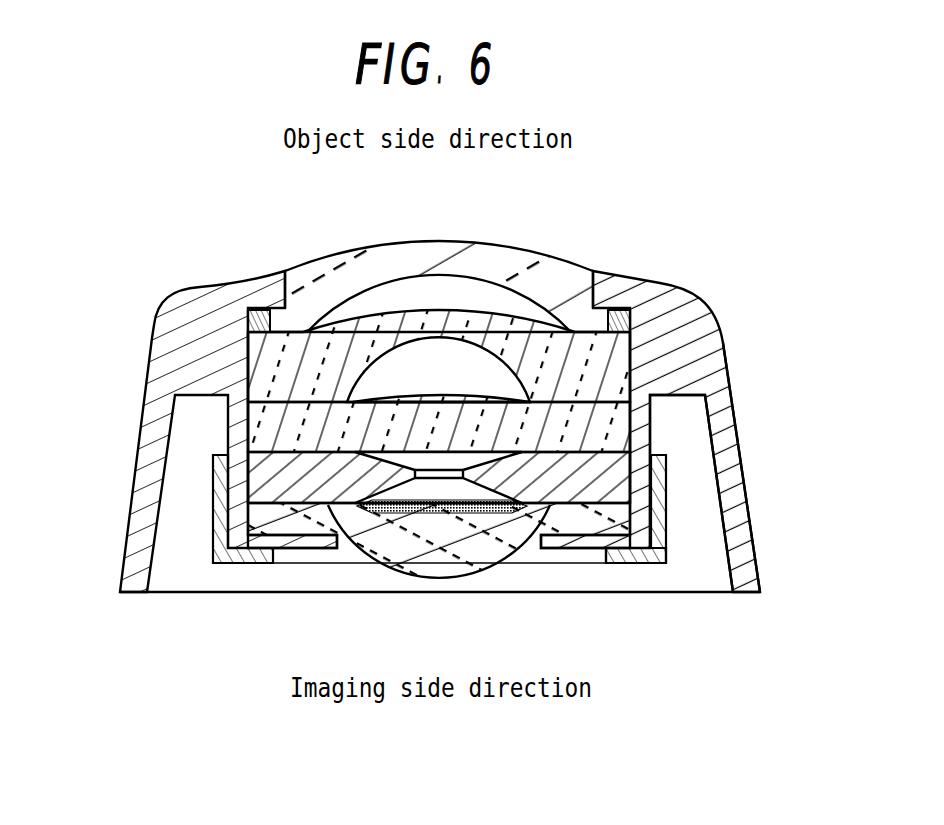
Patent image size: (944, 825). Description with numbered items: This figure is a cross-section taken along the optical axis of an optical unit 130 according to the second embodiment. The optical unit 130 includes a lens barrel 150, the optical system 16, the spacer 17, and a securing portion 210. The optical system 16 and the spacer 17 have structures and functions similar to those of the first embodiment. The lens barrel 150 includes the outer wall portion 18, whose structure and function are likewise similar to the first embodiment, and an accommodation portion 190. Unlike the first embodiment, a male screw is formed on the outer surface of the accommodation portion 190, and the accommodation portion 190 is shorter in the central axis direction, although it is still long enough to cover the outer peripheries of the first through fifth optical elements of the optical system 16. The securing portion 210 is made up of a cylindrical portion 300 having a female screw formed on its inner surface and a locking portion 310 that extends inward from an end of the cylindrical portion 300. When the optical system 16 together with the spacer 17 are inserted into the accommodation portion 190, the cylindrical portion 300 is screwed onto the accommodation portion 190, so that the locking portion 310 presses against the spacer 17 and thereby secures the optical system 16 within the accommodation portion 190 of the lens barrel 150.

The optical system 16 is at (534, 250).
The spacer 17 is at (557, 550).
The outer wall portion 18 is at (743, 467).
The optical unit 130 is at (263, 660).
The lens barrel 150 is at (145, 418).
The accommodation portion 190 is at (705, 423).
The securing portion 210 is at (670, 543).
The cylindrical portion 300 is at (662, 498).
The locking portion 310 is at (610, 563).